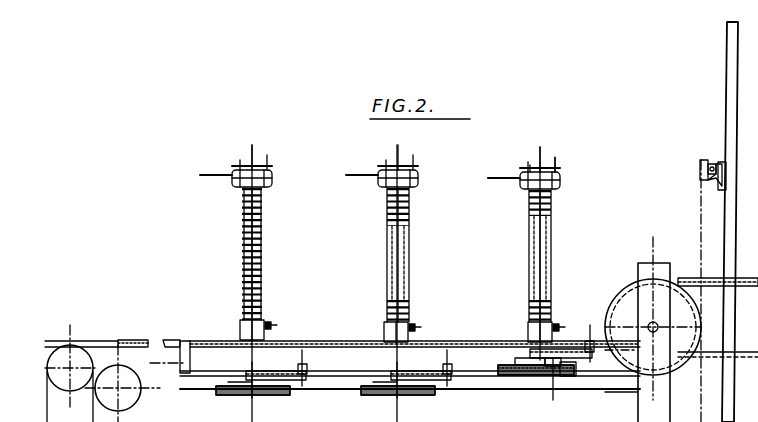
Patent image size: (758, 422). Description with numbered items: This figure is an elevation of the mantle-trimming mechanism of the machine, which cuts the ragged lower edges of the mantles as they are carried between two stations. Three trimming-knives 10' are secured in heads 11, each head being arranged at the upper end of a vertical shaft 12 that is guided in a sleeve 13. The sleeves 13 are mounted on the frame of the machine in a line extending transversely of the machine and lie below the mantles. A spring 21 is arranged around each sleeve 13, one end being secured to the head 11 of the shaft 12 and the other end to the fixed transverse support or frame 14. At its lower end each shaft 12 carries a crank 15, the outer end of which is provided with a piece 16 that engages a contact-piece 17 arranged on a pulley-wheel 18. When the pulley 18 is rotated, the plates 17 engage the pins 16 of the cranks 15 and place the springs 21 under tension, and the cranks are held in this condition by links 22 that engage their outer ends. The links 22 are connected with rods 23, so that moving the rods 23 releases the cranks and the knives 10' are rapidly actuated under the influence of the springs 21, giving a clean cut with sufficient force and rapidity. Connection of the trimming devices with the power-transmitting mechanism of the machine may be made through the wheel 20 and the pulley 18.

The trimming-knife 10' is at (508, 160).
The head 11 is at (552, 172).
The vertical shaft 12 is at (552, 230).
The sleeve 13 is at (552, 275).
The fixed transverse support or frame 14 is at (476, 344).
The crank 15 is at (540, 376).
The piece 16 is at (560, 389).
The contact-piece 17 is at (575, 378).
The pulley-wheel 18 is at (512, 376).
The wheel 20 is at (705, 322).
The spring 21 is at (553, 211).
The link 22 is at (578, 340).
The rod 23 is at (134, 339).